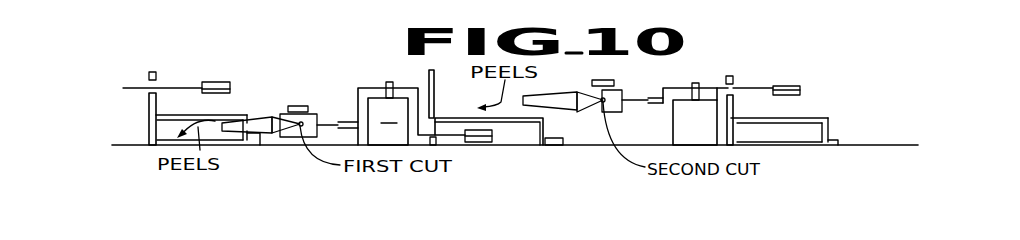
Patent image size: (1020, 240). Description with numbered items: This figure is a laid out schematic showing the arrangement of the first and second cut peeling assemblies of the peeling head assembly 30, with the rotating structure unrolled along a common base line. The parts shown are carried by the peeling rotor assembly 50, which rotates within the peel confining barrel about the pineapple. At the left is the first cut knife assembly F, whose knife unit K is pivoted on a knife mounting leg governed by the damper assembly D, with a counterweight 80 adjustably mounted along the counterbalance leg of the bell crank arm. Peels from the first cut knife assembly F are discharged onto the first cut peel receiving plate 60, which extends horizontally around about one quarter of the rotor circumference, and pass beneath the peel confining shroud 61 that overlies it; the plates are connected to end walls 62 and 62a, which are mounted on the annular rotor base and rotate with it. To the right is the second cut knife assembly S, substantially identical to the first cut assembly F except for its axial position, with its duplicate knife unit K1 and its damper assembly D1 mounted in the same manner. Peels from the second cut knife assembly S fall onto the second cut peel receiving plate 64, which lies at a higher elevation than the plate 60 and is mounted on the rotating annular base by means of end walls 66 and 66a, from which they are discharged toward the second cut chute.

The peeling head assembly 30 is at (766, 50).
The peeling rotor assembly 50 is at (566, 157).
The first cut peel receiving plate 60 is at (233, 144).
The peel confining shroud 61 is at (175, 114).
The end wall 62 is at (150, 128).
The end wall 62a is at (253, 123).
The second cut peel receiving plate 64 is at (453, 114).
The end wall 66 is at (431, 78).
The end wall 66a is at (548, 128).
The counterweight 80 is at (480, 143).
The knife unit K is at (287, 139).
The knife unit K1 is at (597, 95).
The damper assembly D is at (411, 113).
The damper assembly D1 is at (666, 121).
The first cut knife assembly F is at (339, 98).
The second cut knife assembly S is at (643, 73).